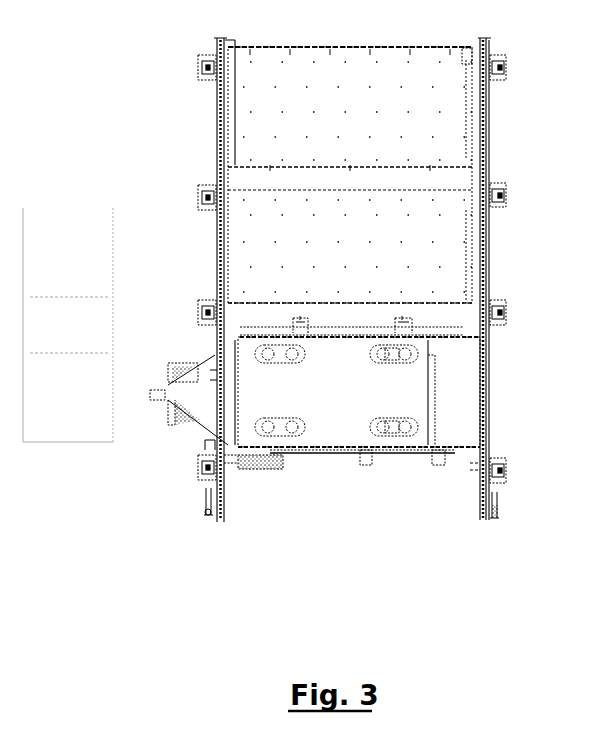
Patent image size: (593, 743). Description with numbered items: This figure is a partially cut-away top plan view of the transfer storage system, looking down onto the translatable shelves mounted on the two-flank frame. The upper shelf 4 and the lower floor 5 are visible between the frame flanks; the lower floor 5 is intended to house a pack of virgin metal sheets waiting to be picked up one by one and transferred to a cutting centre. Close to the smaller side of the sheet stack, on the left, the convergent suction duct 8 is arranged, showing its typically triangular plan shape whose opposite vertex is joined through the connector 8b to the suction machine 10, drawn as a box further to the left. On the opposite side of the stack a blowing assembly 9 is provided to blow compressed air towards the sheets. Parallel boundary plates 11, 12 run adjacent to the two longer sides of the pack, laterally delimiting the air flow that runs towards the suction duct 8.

The translatable shelf 4 is at (455, 118).
The lower floor 5 is at (322, 425).
The convergent suction duct 8 is at (207, 398).
The connector 8b is at (163, 392).
The blowing assembly 9 is at (483, 419).
The suction machine 10 is at (60, 413).
The boundary plate 11 is at (347, 332).
The boundary plate 12 is at (407, 452).